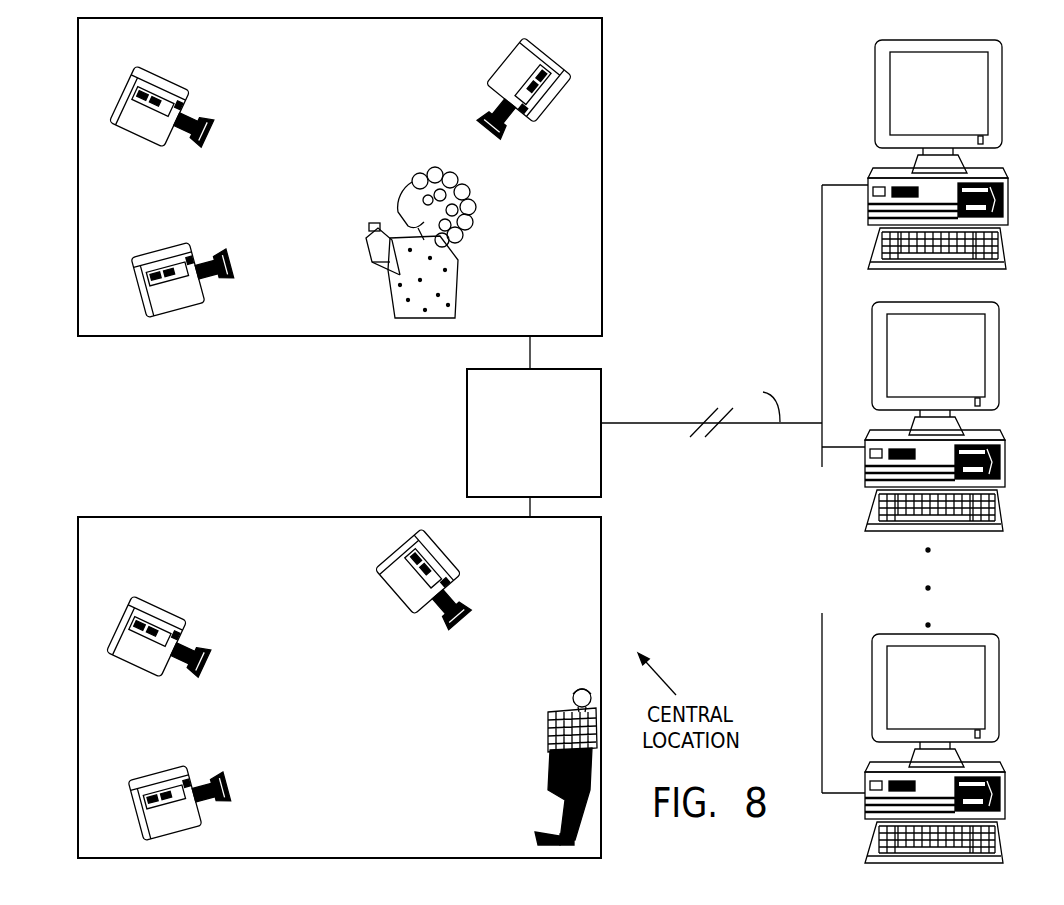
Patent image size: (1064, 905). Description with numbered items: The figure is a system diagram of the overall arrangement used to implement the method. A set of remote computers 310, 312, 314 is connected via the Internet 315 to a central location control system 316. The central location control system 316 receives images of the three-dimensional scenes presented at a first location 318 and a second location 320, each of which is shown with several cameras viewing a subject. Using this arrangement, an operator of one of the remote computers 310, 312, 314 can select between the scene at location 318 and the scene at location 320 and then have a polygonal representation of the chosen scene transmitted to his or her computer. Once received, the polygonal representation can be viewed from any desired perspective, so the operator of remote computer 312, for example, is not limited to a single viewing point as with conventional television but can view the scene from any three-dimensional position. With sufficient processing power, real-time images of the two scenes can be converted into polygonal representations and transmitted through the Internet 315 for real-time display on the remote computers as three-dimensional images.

The remote computer 310 is at (1008, 203).
The remote computer 312 is at (1003, 468).
The remote computer 314 is at (1003, 790).
The Internet 315 is at (622, 423).
The central location control system 316 is at (467, 453).
The location 318 is at (603, 315).
The location 320 is at (603, 607).